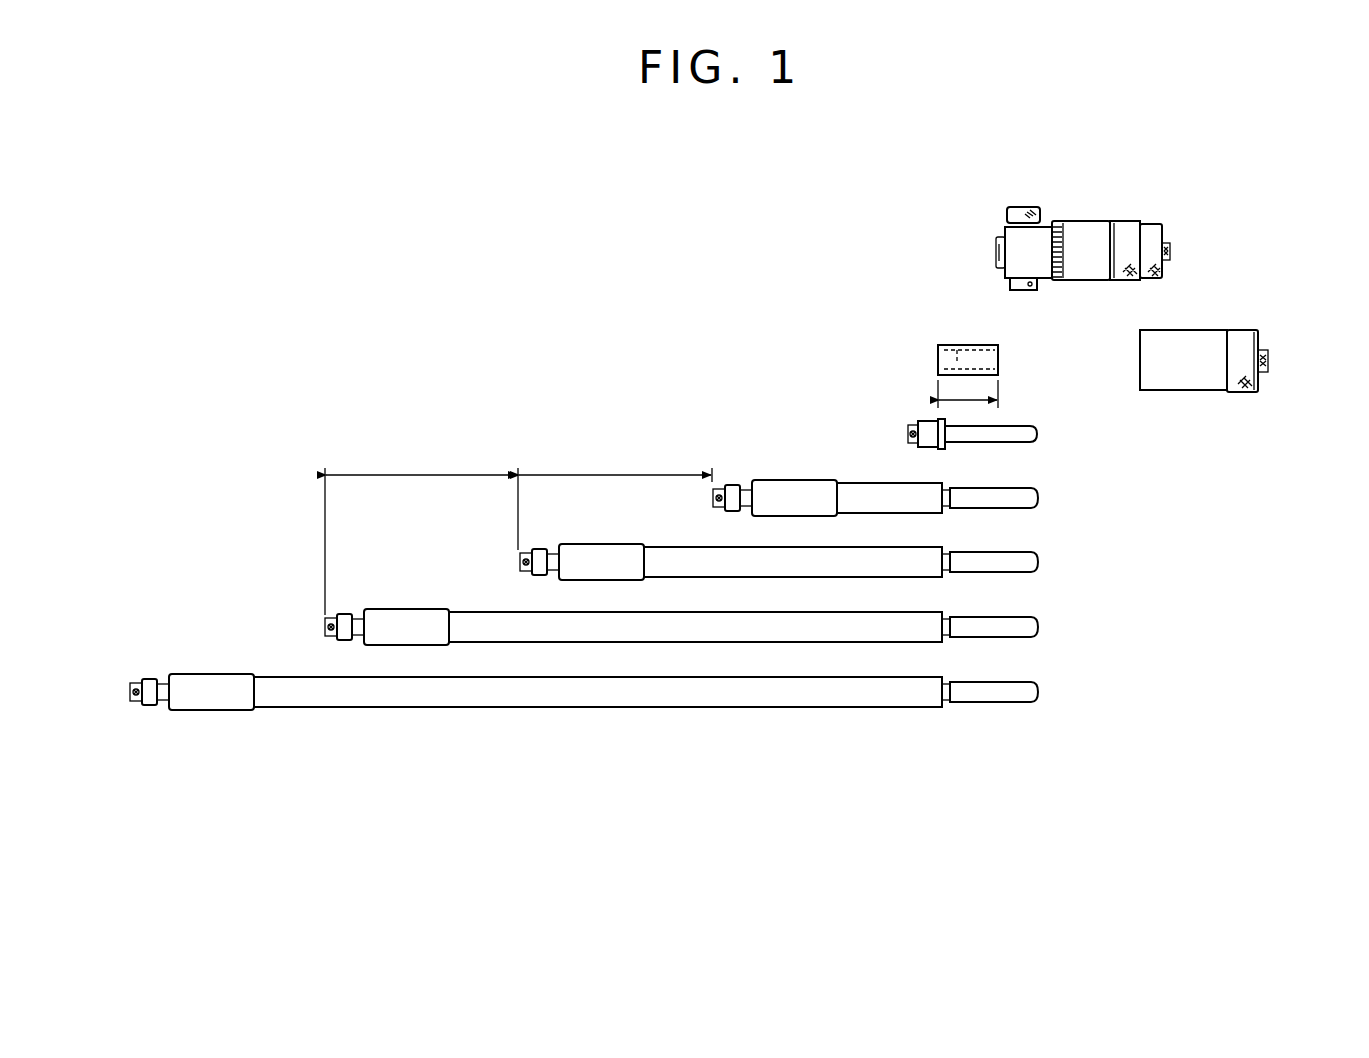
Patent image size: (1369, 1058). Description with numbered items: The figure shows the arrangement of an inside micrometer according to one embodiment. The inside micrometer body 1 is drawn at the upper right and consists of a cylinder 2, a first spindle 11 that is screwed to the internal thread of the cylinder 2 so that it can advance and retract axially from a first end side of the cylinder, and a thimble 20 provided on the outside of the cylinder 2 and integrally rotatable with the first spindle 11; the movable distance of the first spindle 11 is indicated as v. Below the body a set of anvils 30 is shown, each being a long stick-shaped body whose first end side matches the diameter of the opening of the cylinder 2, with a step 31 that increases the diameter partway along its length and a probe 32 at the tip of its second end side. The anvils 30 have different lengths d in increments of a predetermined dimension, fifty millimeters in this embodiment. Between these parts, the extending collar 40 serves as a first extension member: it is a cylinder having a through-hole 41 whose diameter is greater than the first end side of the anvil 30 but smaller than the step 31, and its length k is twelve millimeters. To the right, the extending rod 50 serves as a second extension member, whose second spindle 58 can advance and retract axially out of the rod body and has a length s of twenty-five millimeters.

The inside micrometer body 1 is at (1100, 190).
The cylinder 2 is at (1040, 265).
The first spindle 11 is at (1306, 188).
The thimble 20 is at (1090, 265).
The anvils 30 is at (1090, 423).
The step 31 is at (945, 447).
The probe 32 is at (908, 434).
The extending collar 40 is at (953, 327).
The through-hole 41 is at (938, 357).
The extending rod 50 is at (1205, 400).
The second spindle 58 is at (1302, 305).